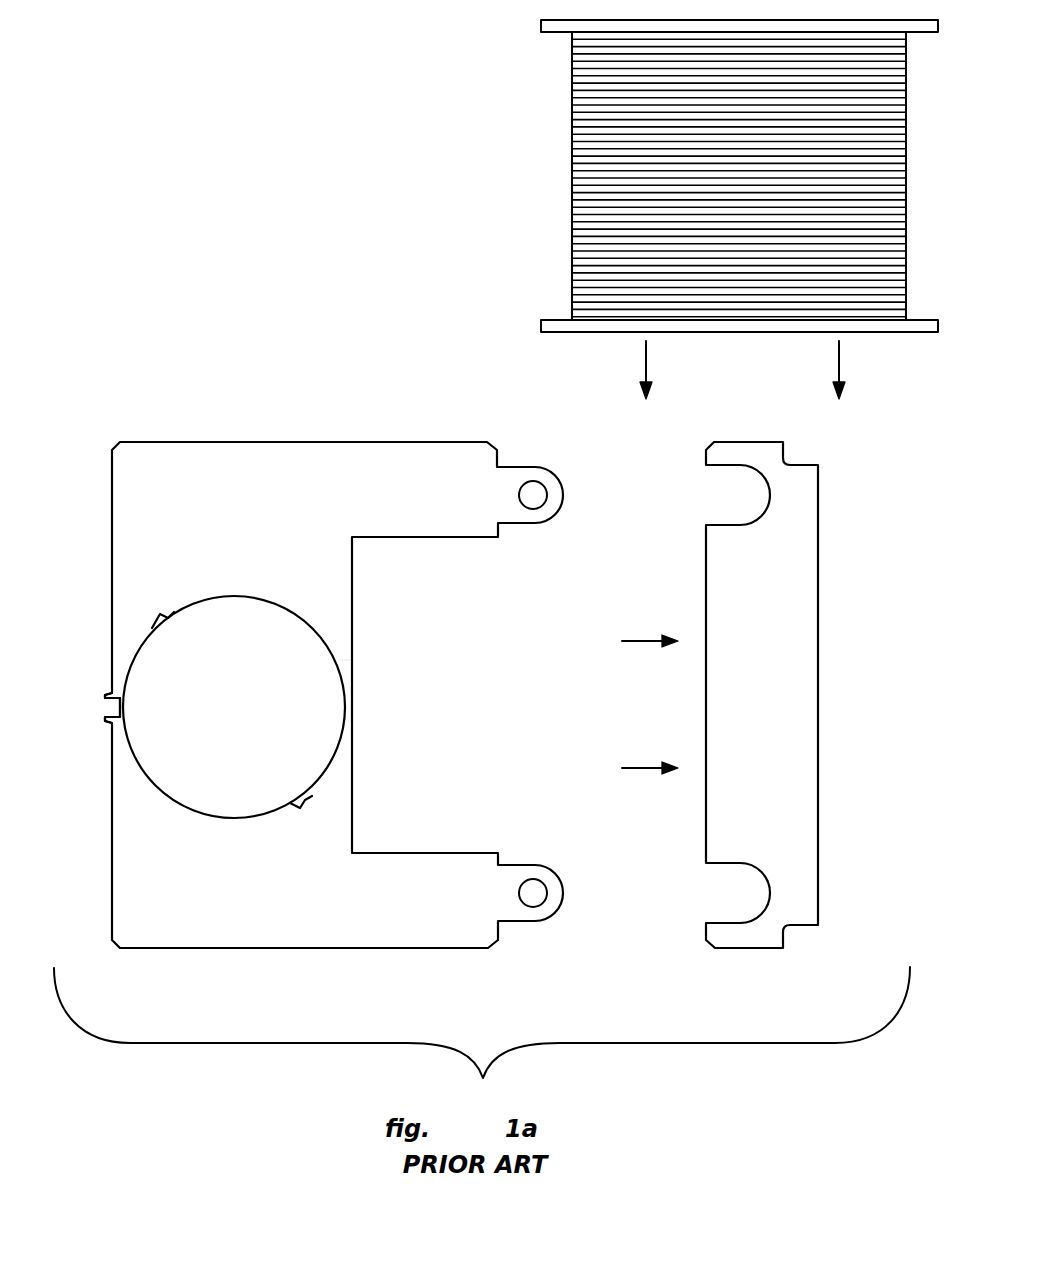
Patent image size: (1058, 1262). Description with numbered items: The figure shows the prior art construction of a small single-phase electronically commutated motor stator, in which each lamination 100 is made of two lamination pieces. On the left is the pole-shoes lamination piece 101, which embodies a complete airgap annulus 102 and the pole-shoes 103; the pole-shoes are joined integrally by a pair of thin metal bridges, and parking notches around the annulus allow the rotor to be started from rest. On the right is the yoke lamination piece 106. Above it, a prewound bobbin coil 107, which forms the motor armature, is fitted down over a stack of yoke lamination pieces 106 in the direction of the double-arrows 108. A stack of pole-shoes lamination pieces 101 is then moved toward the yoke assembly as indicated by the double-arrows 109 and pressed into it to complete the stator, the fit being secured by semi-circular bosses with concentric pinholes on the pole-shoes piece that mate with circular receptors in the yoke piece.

The lamination 100 is at (621, 1090).
The pole-shoes lamination piece 101 is at (252, 442).
The airgap annulus 102 is at (182, 779).
The pole-shoes 103 is at (225, 817).
The yoke lamination piece 106 is at (820, 705).
The prewound bobbin coil 107 is at (677, 146).
The double-arrows 108 is at (647, 352).
The double-arrows 109 is at (641, 642).